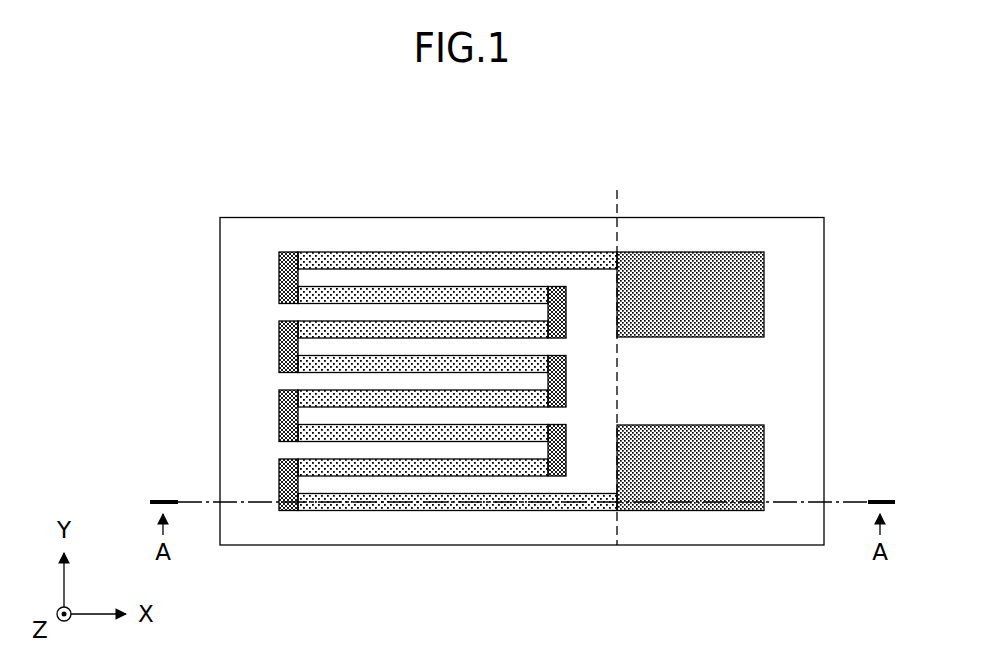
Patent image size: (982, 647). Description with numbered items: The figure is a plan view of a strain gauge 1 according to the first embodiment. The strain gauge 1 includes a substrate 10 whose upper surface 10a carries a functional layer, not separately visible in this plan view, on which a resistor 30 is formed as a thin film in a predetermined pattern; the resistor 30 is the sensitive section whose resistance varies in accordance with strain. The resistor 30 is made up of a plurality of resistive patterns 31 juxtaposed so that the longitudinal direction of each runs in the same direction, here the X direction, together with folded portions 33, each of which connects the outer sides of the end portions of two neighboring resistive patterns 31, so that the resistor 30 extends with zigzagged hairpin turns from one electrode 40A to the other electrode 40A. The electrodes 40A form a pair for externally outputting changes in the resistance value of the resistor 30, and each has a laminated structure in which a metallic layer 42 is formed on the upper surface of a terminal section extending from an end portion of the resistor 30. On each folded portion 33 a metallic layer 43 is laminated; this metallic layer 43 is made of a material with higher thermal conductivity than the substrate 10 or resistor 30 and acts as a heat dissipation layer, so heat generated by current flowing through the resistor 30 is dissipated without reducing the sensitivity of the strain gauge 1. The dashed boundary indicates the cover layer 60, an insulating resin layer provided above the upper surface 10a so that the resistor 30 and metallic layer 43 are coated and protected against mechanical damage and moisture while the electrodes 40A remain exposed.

The strain gauge 1 is at (100, 155).
The substrate 10 is at (244, 208).
The upper surface of the substrate 10a is at (461, 233).
The resistor 30 is at (265, 160).
The resistive pattern 31 is at (367, 257).
The folded portion 33 is at (287, 250).
The electrode 40A is at (706, 334).
The metallic layer 42 is at (691, 272).
The metallic layer 43 is at (286, 348).
The cover layer 60 is at (619, 234).